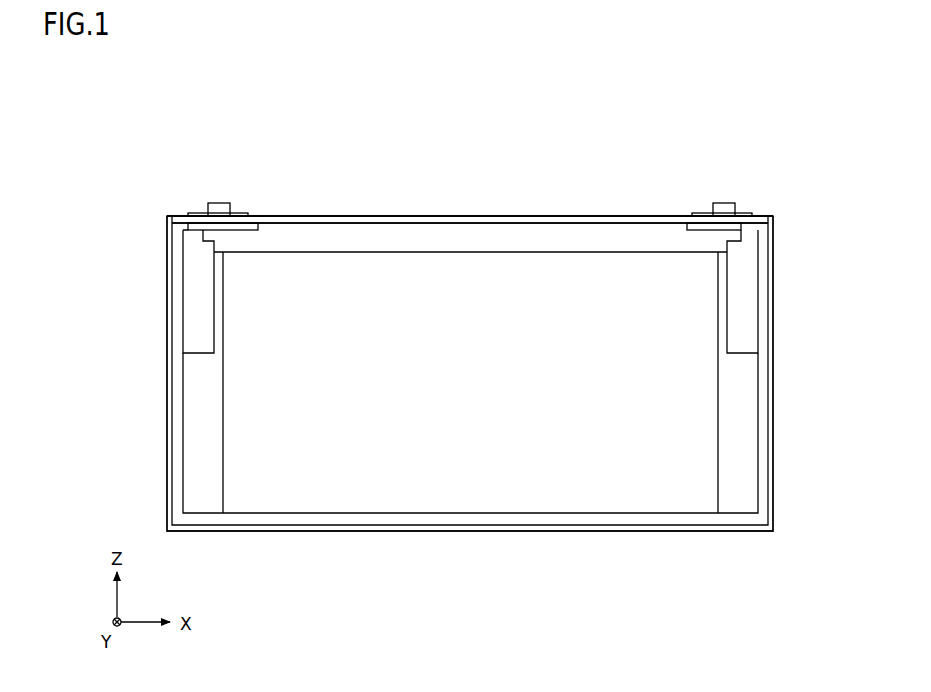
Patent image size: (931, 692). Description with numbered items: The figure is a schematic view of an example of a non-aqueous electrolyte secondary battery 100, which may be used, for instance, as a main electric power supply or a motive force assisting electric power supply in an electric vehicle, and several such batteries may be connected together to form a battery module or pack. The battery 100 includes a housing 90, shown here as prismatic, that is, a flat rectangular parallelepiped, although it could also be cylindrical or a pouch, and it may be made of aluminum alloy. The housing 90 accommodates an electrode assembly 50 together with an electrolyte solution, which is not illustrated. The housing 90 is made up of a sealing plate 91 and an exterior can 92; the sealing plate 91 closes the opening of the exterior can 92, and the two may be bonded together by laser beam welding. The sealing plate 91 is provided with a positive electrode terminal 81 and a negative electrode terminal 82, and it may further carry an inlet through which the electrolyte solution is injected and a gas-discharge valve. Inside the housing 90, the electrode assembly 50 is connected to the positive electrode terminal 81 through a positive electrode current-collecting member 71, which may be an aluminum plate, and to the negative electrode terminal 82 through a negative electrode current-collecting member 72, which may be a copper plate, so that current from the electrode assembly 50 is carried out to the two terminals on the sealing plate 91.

The battery 100 is at (173, 123).
The housing 90 is at (855, 137).
The sealing plate 91 is at (597, 215).
The exterior can 92 is at (775, 240).
The positive electrode terminal 81 is at (725, 202).
The negative electrode terminal 82 is at (217, 200).
The positive electrode current-collecting member 71 is at (743, 302).
The negative electrode current-collecting member 72 is at (195, 297).
The electrode assembly 50 is at (472, 472).